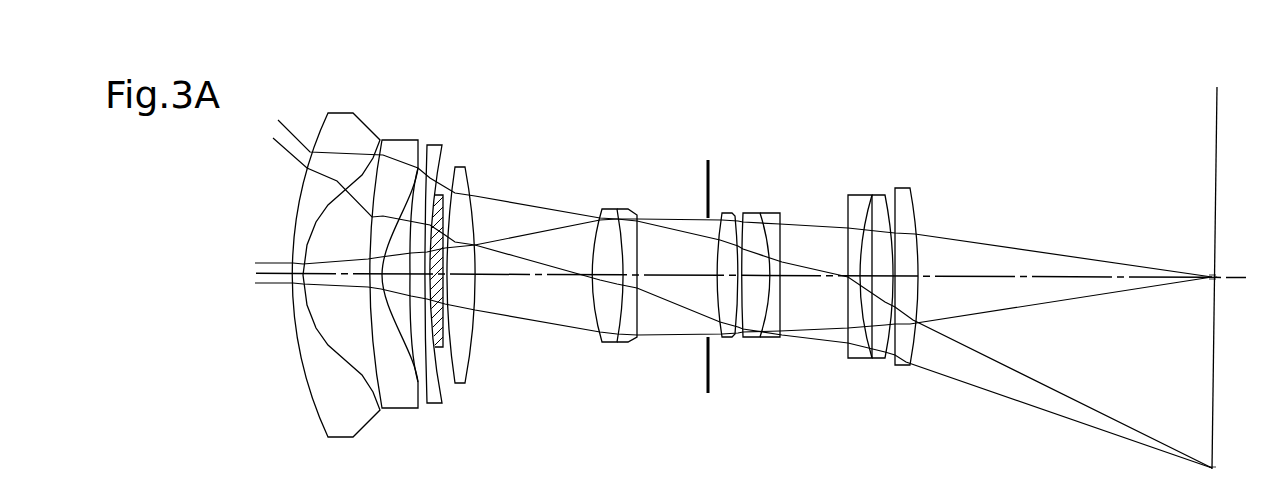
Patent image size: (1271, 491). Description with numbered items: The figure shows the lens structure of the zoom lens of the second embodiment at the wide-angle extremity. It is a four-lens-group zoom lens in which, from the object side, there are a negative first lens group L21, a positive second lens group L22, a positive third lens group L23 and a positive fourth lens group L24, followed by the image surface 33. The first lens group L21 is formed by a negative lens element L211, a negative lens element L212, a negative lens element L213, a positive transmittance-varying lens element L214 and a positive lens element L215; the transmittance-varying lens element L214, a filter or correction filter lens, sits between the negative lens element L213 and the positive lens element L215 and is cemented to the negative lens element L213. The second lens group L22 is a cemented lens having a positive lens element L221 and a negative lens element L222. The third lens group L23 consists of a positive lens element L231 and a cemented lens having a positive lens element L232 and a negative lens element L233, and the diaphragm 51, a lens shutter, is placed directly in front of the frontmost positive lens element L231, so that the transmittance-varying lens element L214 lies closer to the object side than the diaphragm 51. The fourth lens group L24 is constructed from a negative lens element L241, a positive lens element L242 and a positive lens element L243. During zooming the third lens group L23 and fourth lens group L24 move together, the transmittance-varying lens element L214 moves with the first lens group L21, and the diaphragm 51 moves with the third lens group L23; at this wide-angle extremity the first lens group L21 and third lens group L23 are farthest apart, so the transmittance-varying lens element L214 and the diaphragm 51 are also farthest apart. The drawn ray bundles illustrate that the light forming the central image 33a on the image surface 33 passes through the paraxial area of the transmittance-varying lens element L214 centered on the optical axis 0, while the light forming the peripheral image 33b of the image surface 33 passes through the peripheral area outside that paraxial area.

The negative first lens group L21 is at (507, 63).
The negative lens element L211 is at (350, 135).
The negative lens element L212 is at (395, 152).
The negative lens element L213 is at (438, 144).
The transmittance-varying lens element L214 is at (443, 348).
The positive lens element L215 is at (467, 166).
The positive second lens group L22 is at (630, 62).
The positive lens element L221 is at (602, 208).
The negative lens element L222 is at (627, 208).
The positive third lens group L23 is at (788, 62).
The positive lens element L231 is at (725, 212).
The positive lens element L232 is at (754, 212).
The negative lens element L233 is at (777, 212).
The positive fourth lens group L24 is at (930, 62).
The negative lens element L241 is at (857, 194).
The positive lens element L242 is at (880, 194).
The positive lens element L243 is at (905, 187).
The diaphragm 51 is at (706, 392).
The image surface 33 is at (1216, 103).
The central image 33a is at (1212, 270).
The peripheral image 33b is at (1211, 464).
The optical axis 0 is at (1236, 277).